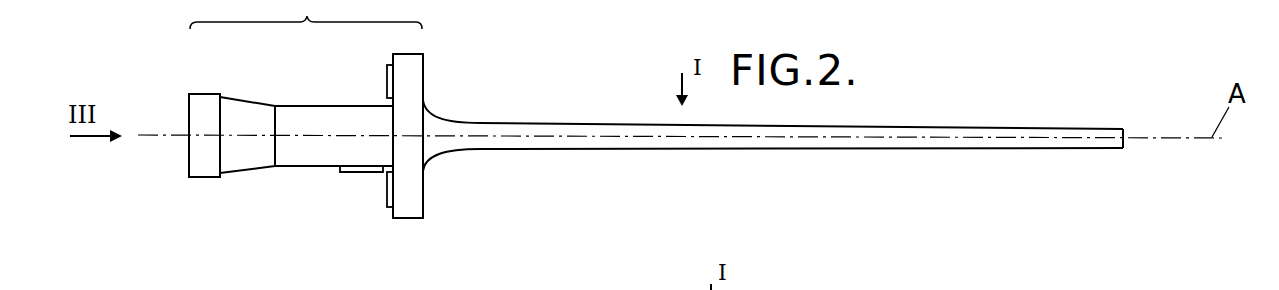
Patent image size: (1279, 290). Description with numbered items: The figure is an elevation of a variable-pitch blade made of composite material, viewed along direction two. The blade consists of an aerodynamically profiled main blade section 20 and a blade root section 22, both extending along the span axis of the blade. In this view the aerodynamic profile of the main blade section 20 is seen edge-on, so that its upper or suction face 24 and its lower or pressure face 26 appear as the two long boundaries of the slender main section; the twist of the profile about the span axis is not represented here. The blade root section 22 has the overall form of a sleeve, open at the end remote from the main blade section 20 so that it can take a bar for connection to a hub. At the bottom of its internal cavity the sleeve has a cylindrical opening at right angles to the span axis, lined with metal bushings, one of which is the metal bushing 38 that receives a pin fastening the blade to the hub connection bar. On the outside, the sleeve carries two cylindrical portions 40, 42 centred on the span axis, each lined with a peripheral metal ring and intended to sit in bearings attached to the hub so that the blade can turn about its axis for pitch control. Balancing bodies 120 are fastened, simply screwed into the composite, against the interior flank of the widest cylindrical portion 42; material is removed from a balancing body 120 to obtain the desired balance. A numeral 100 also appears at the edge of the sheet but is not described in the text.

The main blade section 20 is at (773, 133).
The blade root section 22 is at (306, 14).
The upper face 24 is at (560, 122).
The lower face 26 is at (580, 150).
The metal bushing 38 is at (352, 172).
The cylindrical portion 40 is at (204, 168).
The cylindrical portion 42 is at (413, 213).
The balancing body 120 is at (387, 83).
The partially visible numeral of adjacent figure 100 is at (784, 284).